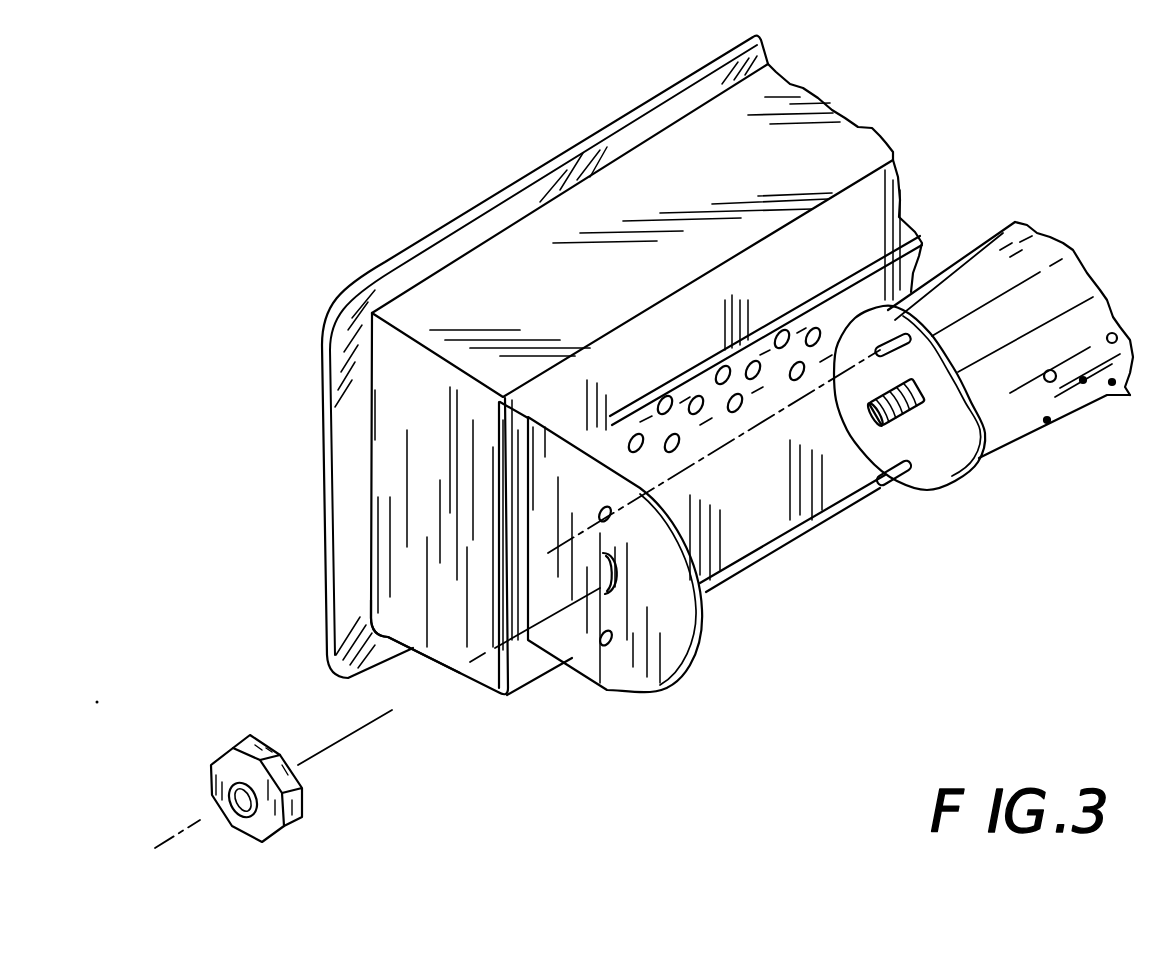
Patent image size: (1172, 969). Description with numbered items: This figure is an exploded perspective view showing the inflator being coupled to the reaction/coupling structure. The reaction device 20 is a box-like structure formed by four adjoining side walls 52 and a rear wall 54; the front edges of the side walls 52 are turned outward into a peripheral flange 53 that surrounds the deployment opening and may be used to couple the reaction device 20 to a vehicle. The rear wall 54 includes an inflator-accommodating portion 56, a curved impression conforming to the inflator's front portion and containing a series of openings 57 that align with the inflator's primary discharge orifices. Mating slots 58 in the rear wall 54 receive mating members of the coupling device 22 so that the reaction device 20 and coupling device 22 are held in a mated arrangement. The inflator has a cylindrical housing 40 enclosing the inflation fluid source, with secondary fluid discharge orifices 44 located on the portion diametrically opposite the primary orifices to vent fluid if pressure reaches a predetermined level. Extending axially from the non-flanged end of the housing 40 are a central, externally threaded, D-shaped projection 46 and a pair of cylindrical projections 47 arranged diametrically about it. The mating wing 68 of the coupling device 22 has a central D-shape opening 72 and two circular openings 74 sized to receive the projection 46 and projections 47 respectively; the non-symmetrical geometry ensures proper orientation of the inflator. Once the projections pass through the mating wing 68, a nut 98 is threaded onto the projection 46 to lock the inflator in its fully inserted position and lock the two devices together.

The reaction device 20 is at (866, 124).
The coupling device 22 is at (673, 690).
The cylindrical housing 40 is at (1023, 260).
The secondary fluid discharge orifices 44 is at (1113, 384).
The projection 46 is at (983, 420).
The projections 47 is at (877, 337).
The side walls 52 is at (413, 650).
The peripheral flange 53 is at (578, 138).
The rear wall 54 is at (826, 274).
The inflator-accommodating portion 56 is at (680, 395).
The openings 57 is at (750, 362).
The mating slots 58 is at (500, 405).
The mating wing 68 is at (678, 596).
The D-shape opening 72 is at (605, 560).
The circular openings 74 is at (612, 518).
The nut 98 is at (300, 776).